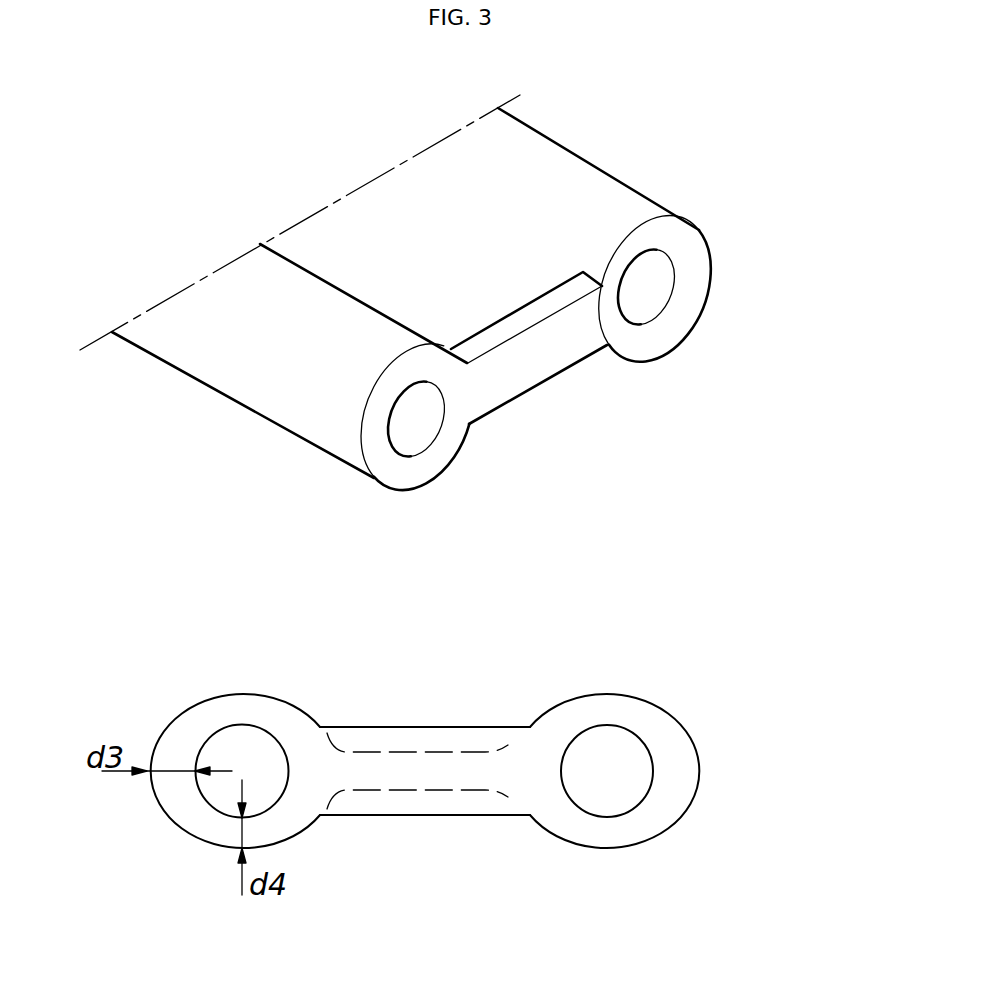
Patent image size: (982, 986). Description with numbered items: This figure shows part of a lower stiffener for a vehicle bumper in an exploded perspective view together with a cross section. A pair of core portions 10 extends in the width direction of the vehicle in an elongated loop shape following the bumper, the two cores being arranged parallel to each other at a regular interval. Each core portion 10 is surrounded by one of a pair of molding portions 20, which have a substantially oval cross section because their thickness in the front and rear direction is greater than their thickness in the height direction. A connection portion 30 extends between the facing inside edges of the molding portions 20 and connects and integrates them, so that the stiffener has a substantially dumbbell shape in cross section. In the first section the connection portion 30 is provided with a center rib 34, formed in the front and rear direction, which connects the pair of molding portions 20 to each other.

The core portion 10 is at (642, 295).
The molding portion 20 is at (693, 235).
The connection portion 30 is at (357, 233).
The center rib 34 is at (520, 318).